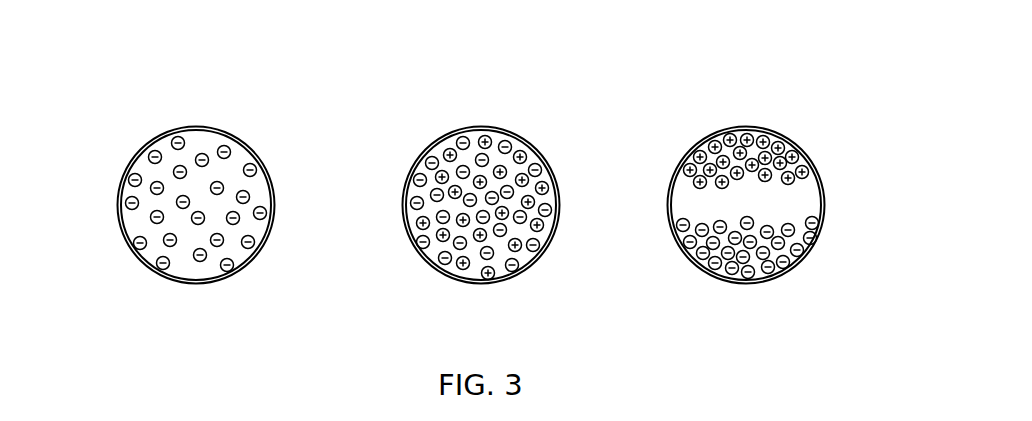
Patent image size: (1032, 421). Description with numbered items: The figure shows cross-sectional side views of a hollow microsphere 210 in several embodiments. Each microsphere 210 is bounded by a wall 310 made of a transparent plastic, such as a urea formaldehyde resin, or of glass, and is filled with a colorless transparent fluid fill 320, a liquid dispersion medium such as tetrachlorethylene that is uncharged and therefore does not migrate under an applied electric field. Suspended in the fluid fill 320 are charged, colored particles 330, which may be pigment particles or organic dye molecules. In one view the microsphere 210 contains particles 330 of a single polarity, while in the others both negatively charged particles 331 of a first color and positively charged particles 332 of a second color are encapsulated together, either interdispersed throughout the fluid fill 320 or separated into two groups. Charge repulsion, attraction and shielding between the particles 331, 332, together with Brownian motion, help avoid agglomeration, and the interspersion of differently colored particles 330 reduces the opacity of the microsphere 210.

The hollow microsphere 210 is at (145, 122).
The wall 310 is at (117, 220).
The colorless transparent fluid fill 320 is at (185, 235).
The particles 330 is at (176, 172).
The negatively charged particles 331 is at (430, 165).
The positively charged particles 332 is at (442, 240).